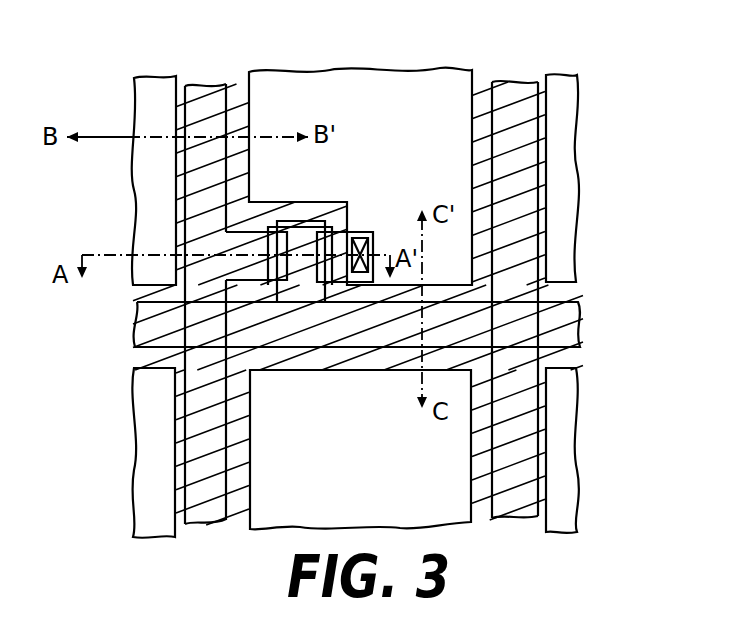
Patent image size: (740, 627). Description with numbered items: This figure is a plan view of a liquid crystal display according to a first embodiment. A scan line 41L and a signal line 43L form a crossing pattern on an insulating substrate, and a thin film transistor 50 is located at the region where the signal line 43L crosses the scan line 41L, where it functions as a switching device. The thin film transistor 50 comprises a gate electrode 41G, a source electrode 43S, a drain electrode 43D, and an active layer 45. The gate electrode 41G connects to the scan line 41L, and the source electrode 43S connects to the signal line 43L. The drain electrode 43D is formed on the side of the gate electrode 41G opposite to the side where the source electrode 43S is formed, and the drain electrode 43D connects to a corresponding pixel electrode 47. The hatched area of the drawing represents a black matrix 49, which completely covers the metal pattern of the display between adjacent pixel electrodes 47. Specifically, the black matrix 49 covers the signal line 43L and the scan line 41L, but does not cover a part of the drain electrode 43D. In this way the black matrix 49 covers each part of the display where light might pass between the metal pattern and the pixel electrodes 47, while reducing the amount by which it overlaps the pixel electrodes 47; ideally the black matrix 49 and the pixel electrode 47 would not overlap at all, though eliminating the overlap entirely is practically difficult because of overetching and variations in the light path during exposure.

The pixel electrode 47 is at (367, 84).
The black matrix 49 is at (177, 213).
The signal line 43L is at (205, 88).
The scan line 41L is at (578, 314).
The gate electrode 41G is at (345, 206).
The active layer 45 is at (290, 222).
The source electrode 43S is at (245, 240).
The drain electrode 43D is at (363, 228).
The thin film transistor 50 is at (342, 158).